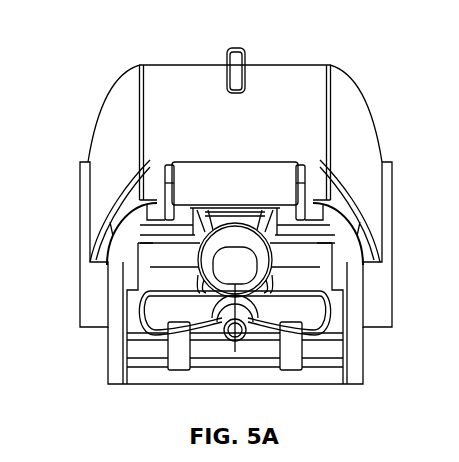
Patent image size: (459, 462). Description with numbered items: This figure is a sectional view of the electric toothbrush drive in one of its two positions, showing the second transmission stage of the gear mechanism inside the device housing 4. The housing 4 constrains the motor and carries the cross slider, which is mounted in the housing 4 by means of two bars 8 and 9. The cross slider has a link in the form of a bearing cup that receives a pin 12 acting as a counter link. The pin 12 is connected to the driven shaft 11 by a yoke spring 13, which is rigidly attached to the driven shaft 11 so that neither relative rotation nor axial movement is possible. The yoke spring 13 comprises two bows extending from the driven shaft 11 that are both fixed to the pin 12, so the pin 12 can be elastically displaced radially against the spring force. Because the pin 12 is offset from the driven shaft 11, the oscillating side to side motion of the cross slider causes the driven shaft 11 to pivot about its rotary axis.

The device housing 4 is at (305, 65).
The bar 8 is at (152, 355).
The bar 9 is at (310, 228).
The driven shaft 11 is at (229, 260).
The pin 12 is at (237, 340).
The yoke spring 13 is at (164, 286).